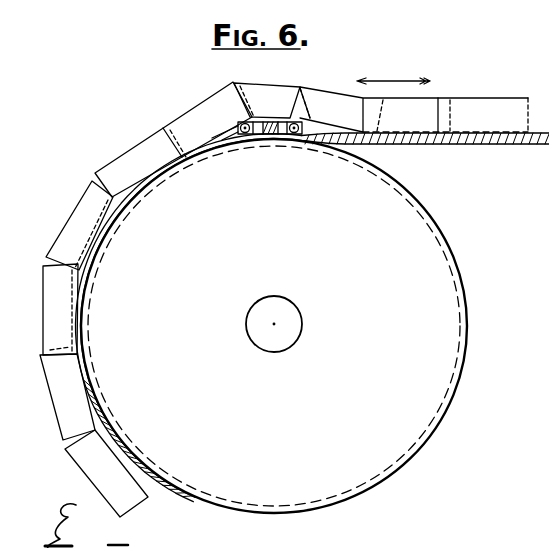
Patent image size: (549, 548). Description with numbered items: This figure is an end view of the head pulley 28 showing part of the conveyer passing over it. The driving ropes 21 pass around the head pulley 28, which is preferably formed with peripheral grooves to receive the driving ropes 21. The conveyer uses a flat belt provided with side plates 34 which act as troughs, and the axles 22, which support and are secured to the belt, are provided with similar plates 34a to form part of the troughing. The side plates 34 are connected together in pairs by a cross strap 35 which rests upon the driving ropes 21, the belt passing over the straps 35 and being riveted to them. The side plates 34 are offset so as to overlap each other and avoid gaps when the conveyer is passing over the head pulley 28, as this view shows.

The driving ropes 21 is at (173, 503).
The axles 22 is at (273, 136).
The head pulley 28 is at (274, 326).
The side plates 34 is at (478, 95).
The plates 34a is at (268, 97).
The cross strap 35 is at (102, 237).